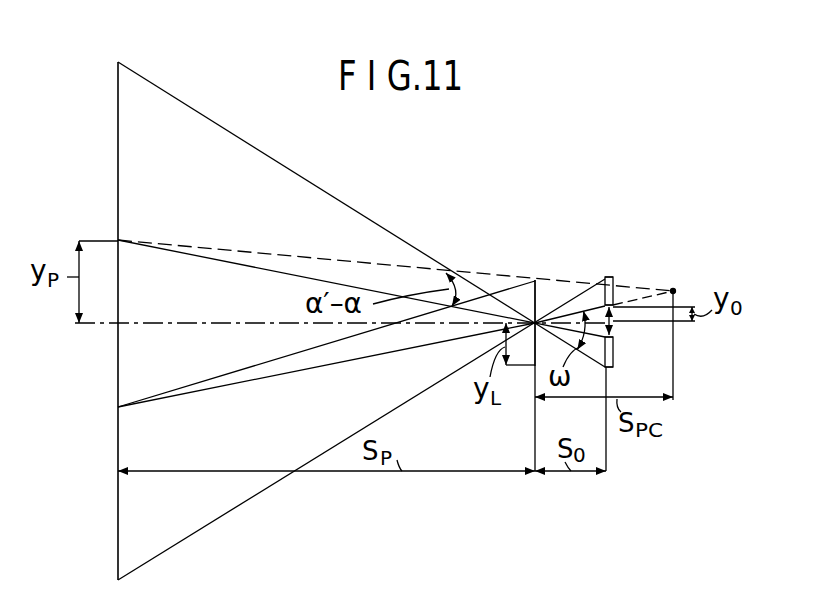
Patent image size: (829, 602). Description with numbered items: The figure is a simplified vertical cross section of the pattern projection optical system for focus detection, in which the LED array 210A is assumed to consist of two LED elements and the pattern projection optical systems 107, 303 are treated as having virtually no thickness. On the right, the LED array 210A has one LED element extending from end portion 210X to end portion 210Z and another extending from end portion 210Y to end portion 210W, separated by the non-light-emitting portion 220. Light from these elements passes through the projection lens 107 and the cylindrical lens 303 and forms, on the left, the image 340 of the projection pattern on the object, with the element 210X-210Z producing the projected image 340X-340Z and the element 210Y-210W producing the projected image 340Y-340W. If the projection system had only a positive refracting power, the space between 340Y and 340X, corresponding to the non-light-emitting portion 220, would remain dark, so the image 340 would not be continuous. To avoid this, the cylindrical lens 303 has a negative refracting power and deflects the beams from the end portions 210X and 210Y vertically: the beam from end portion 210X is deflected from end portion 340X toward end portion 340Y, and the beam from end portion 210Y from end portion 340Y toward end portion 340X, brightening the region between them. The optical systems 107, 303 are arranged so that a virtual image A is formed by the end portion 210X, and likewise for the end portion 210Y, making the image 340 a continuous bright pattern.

The image of the projection pattern 340 is at (112, 133).
The end portion of projected image 340W is at (117, 62).
The end portion of projected image 340Y is at (118, 240).
The end portion of projected image 340X is at (118, 407).
The end portion of projected image 340Z is at (118, 580).
The cylindrical lens 303 is at (535, 278).
The projection lens 107 is at (546, 284).
The LED array 210A is at (608, 273).
The end portion of LED element 210Z is at (612, 278).
The end portion of LED element 210X is at (612, 305).
The end portion of LED element 210Y is at (613, 337).
The end portion of LED element 210W is at (613, 367).
The non-light-emitting portion 220 is at (615, 328).
The virtual image A is at (673, 291).